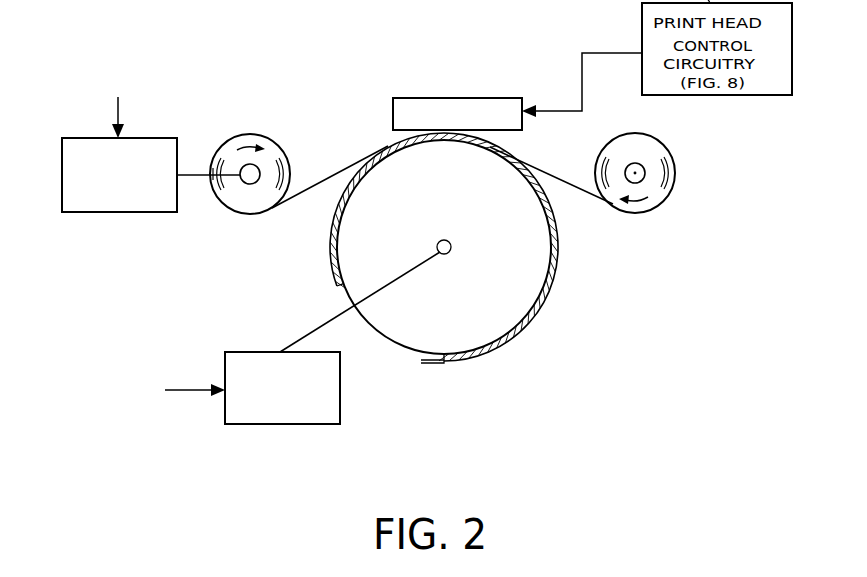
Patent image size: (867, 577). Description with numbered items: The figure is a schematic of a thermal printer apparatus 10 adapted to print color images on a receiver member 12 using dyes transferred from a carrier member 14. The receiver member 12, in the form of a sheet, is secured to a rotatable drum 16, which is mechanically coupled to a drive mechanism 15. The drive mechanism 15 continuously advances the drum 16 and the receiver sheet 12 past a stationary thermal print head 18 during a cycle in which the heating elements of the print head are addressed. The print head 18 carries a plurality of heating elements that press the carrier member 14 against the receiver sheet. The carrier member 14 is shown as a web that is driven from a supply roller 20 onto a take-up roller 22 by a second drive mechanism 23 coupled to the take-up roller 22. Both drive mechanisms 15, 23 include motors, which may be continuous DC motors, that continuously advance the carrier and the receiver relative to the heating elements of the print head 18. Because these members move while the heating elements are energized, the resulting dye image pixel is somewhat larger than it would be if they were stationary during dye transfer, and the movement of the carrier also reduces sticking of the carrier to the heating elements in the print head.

The printer apparatus 10 is at (270, 271).
The receiver member 12 is at (470, 363).
The carrier member 14 is at (329, 180).
The drive mechanism 15 is at (290, 425).
The rotatable drum 16 is at (455, 306).
The thermal print head 18 is at (443, 98).
The supply roller 20 is at (676, 170).
The take-up roller 22 is at (271, 140).
The drive mechanism 23 is at (138, 213).